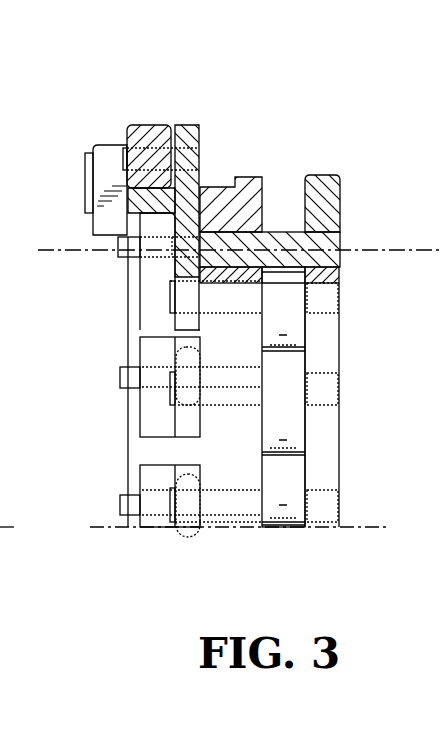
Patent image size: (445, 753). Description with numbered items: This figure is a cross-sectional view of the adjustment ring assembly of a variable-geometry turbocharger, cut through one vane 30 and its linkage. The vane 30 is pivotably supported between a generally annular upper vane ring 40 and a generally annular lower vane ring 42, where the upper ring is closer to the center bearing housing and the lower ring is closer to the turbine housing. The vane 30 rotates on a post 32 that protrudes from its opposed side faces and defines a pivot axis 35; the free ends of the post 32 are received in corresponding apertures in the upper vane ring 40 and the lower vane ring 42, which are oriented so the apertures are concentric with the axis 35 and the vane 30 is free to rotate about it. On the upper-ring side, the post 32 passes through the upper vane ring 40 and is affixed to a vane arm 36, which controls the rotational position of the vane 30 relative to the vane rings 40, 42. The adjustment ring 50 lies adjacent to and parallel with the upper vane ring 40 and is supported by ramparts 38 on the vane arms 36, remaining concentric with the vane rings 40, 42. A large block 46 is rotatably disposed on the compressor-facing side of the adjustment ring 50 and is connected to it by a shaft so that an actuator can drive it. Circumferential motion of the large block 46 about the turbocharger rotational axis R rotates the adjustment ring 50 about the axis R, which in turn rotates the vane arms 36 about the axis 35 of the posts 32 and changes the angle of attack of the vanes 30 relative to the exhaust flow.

The vane 30 is at (287, 302).
The post 32 is at (284, 248).
The pivot axis 35 is at (362, 248).
The vane arm 36 is at (184, 130).
The rampart 38 is at (143, 203).
The upper vane ring 40 is at (218, 192).
The lower vane ring 42 is at (317, 183).
The large block 46 is at (110, 150).
The adjustment ring 50 is at (153, 132).
The turbocharger rotational axis R is at (350, 527).